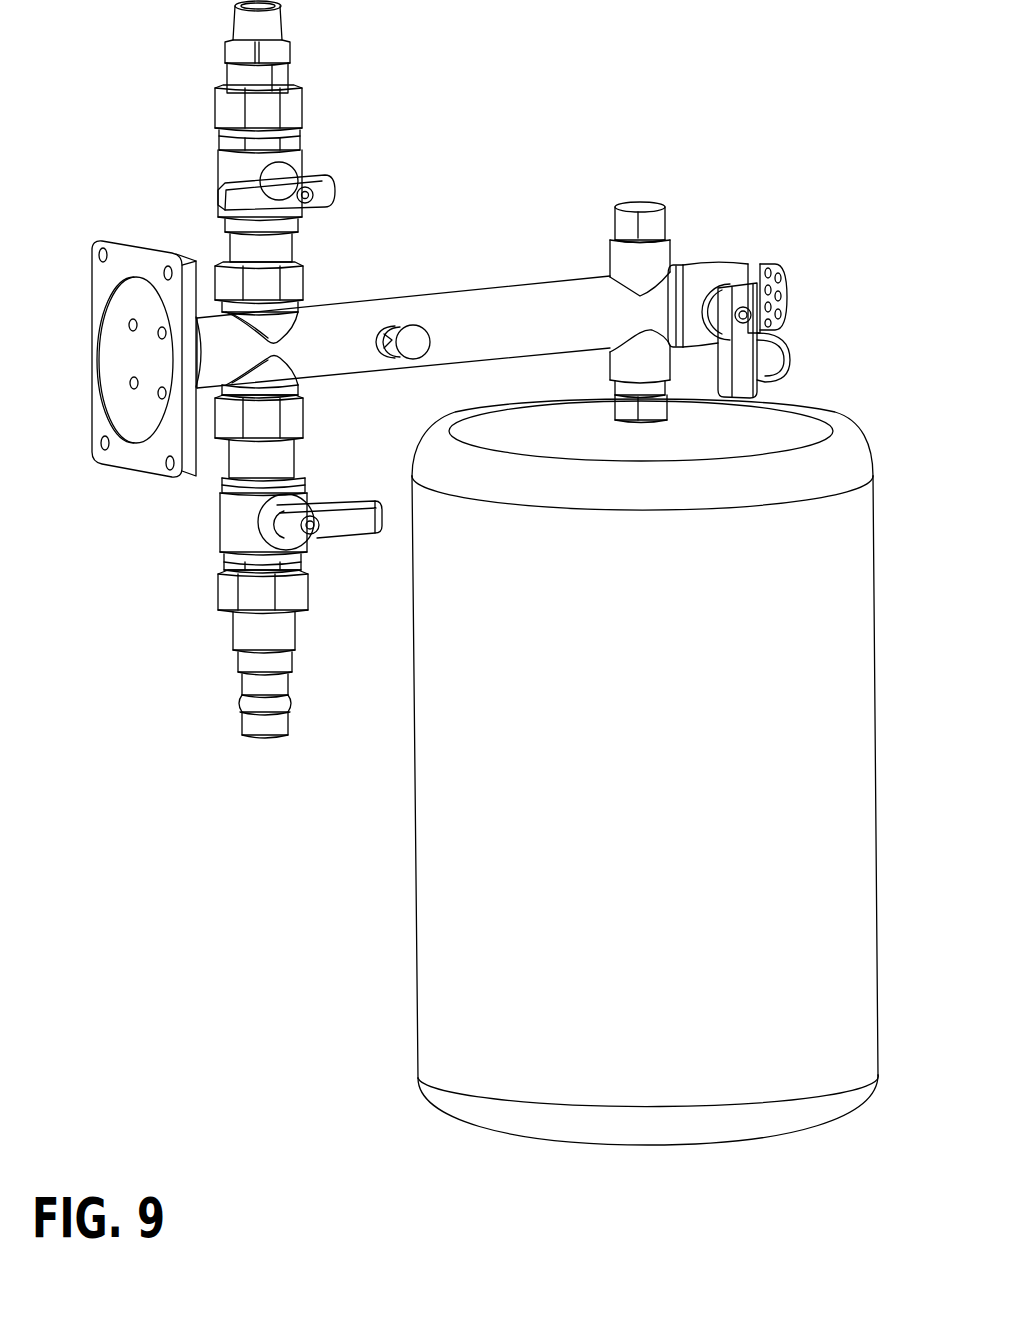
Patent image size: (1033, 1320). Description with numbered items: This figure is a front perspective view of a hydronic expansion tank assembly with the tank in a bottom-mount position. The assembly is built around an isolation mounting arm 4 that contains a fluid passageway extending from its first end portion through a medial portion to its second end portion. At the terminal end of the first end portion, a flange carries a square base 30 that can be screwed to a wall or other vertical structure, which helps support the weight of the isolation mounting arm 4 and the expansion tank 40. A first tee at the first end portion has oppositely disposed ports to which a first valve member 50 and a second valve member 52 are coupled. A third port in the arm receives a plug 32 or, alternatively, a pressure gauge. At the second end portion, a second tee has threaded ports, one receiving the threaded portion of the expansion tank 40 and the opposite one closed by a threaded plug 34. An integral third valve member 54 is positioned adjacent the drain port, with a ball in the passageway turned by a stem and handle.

The isolation mounting arm 4 is at (356, 302).
The square base 30 is at (108, 273).
The plug 32 is at (415, 339).
The threaded plug 34 is at (650, 214).
The expansion tank 40 is at (820, 655).
The first valve member 50 is at (232, 164).
The second valve member 52 is at (238, 537).
The third valve member 54 is at (715, 282).